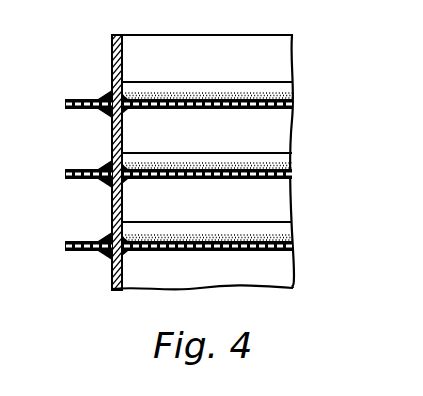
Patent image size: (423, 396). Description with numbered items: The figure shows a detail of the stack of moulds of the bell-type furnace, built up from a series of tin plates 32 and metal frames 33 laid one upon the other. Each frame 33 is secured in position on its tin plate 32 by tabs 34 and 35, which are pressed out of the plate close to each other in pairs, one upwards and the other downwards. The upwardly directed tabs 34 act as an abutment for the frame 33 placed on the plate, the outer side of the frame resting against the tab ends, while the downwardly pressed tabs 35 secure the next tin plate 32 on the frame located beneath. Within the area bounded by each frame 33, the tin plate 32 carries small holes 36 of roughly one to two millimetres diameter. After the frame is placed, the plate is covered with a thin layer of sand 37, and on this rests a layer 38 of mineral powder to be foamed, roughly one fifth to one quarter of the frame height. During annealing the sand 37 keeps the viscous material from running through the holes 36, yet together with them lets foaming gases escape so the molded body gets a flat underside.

The tin plate 32 is at (67, 105).
The frame 33 is at (111, 275).
The tab 34 is at (105, 113).
The tab 35 is at (103, 95).
The small holes 36 is at (195, 104).
The layer of sand 37 is at (292, 100).
The layer of mineral powder 38 is at (240, 82).